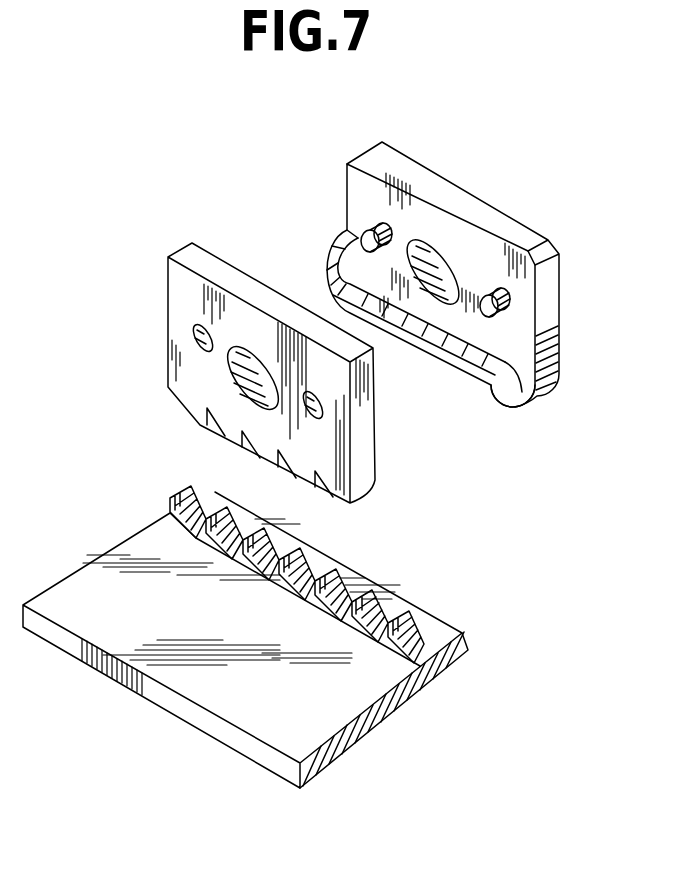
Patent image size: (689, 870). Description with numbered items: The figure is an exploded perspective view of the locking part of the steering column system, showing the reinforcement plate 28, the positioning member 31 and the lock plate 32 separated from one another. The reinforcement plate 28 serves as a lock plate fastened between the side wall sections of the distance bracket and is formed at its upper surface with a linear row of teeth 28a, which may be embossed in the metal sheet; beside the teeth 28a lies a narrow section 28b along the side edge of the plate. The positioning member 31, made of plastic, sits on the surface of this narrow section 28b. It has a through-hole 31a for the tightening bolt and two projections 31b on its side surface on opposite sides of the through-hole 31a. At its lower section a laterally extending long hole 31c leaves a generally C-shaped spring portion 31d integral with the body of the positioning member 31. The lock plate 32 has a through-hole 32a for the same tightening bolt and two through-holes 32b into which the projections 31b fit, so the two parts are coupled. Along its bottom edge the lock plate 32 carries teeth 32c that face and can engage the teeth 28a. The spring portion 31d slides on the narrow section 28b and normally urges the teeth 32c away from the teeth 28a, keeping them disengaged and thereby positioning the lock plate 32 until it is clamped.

The reinforcement plate 28 is at (340, 707).
The teeth 28a is at (403, 633).
The narrow section 28b is at (443, 637).
The positioning member 31 is at (453, 195).
The through-hole 31a is at (435, 273).
The projections 31b is at (364, 232).
The long hole 31c is at (520, 388).
The spring portion 31d is at (460, 380).
The lock plate 32 is at (217, 252).
The through-hole 32a is at (245, 362).
The through-holes 32b is at (194, 341).
The teeth 32c is at (222, 432).